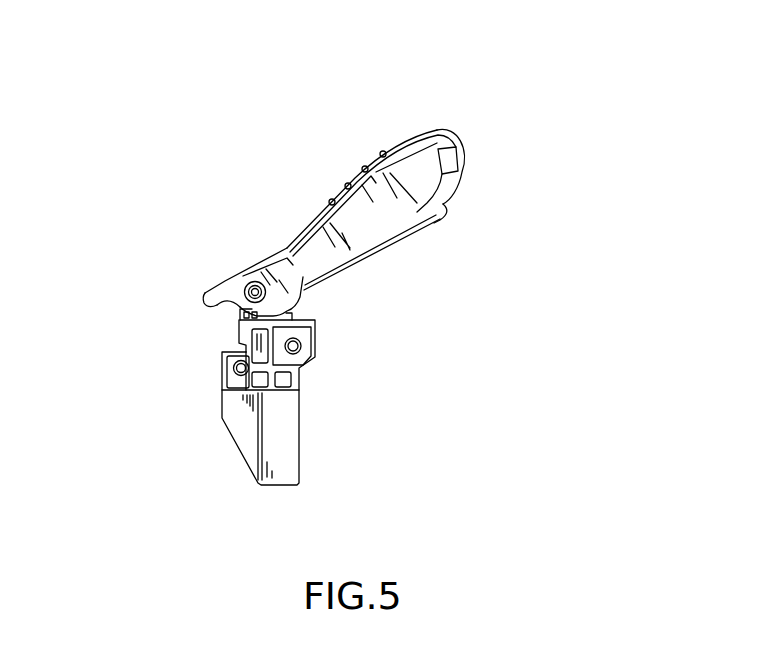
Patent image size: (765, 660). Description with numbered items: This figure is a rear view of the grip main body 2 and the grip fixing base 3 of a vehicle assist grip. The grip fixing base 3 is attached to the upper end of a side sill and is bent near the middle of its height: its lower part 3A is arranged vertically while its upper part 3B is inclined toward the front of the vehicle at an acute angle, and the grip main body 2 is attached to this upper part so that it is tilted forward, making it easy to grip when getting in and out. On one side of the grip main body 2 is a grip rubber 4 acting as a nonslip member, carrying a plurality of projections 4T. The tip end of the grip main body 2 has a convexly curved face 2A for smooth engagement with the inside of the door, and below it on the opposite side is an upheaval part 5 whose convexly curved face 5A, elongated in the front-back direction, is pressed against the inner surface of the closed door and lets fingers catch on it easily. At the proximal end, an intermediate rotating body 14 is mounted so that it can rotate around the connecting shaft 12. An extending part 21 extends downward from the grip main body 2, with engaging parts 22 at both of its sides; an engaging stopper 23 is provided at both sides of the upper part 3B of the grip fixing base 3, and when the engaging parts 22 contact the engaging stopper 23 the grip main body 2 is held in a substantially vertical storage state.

The grip main body 2 is at (475, 183).
The convexly curved face 2A is at (457, 141).
The grip rubber 4 is at (434, 130).
The projections 4T is at (345, 186).
The upheaval part 5 is at (400, 233).
The convexly curved face 5A is at (446, 216).
The connecting shaft 12 is at (246, 281).
The intermediate rotating body 14 is at (292, 310).
The extending part 21 is at (203, 304).
The engaging parts 22 is at (212, 308).
The engaging stopper 23 is at (242, 338).
The grip fixing base 3 is at (222, 440).
The lower part 3A is at (284, 456).
The upper part 3B is at (316, 320).